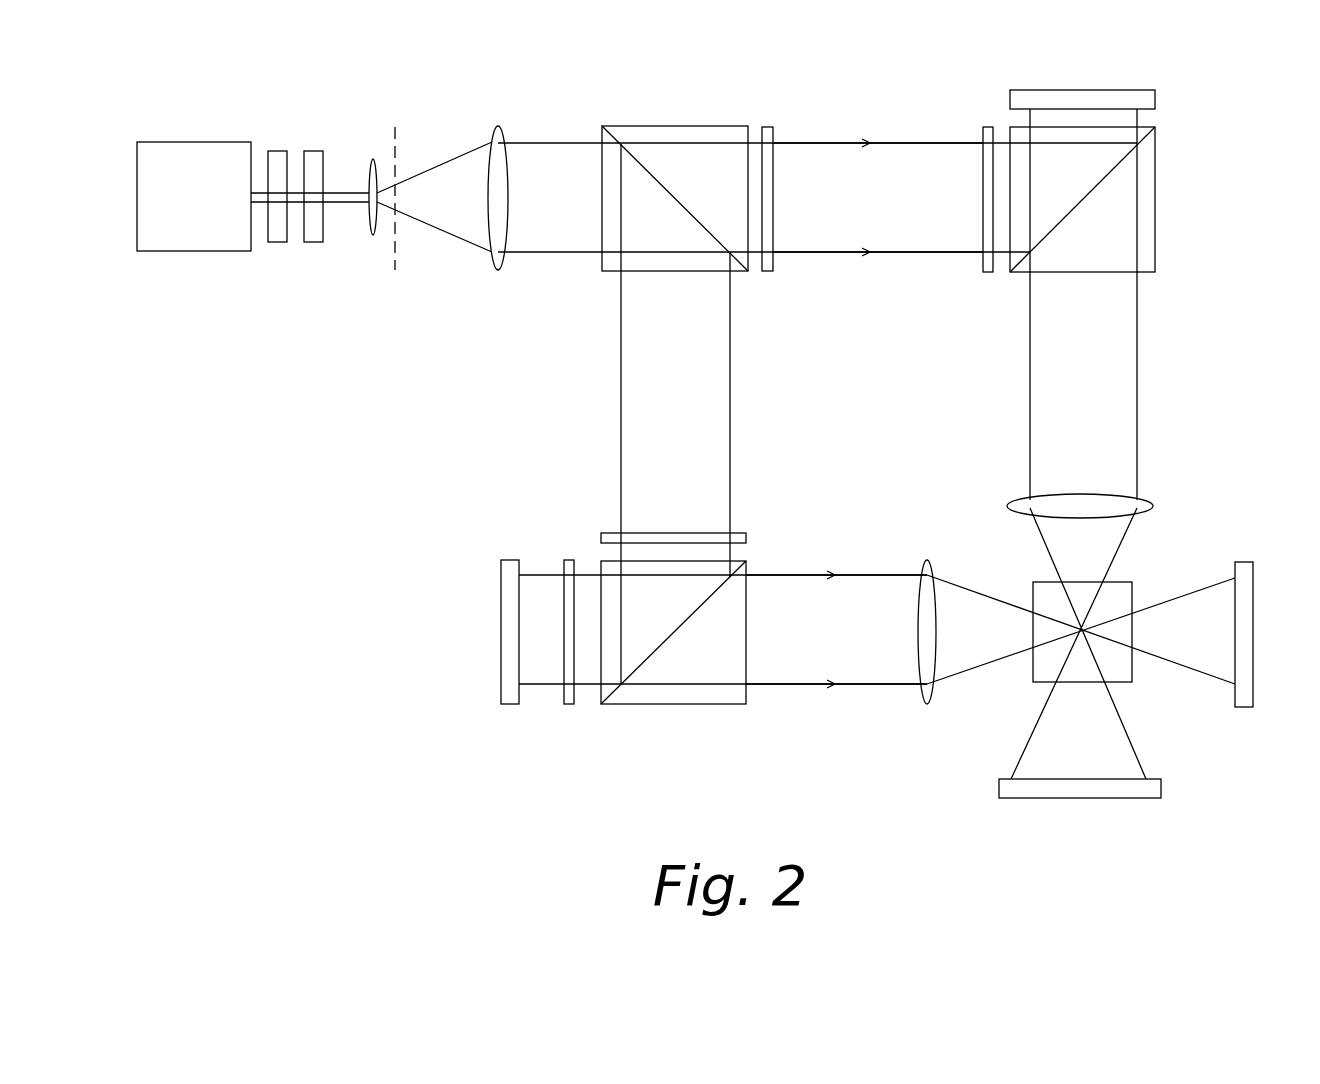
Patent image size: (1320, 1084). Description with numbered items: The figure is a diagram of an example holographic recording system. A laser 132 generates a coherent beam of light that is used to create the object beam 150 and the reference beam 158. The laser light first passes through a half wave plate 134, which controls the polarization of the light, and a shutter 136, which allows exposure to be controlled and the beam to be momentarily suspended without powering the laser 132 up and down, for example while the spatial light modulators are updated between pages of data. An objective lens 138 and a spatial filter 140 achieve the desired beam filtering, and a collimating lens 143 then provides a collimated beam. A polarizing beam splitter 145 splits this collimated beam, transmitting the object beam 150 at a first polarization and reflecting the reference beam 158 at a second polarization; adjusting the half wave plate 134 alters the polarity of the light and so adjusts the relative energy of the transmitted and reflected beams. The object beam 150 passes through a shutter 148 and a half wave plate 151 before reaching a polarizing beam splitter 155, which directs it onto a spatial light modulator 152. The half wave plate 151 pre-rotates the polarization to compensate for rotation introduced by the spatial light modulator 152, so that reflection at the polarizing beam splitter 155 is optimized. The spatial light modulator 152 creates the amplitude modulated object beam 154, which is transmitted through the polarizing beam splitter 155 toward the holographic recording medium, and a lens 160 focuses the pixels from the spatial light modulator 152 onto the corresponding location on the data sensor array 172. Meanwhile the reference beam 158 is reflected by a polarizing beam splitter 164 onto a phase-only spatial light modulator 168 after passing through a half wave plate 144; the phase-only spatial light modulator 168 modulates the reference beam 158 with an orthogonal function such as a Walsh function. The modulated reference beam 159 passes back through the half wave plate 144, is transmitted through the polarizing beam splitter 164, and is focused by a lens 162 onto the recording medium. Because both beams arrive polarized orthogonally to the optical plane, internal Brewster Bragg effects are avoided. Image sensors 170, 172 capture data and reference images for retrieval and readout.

The laser 132 is at (211, 222).
The half wave plate 134 is at (282, 151).
The shutter 136 is at (310, 242).
The objective lens 138 is at (370, 136).
The spatial filter 140 is at (397, 290).
The collimating lens 143 is at (498, 128).
The polarizing beam splitter 145 is at (685, 126).
The shutter 148 is at (766, 127).
The object beam 150 is at (858, 126).
The half wave plate 151 is at (987, 273).
The spatial light modulator 152 is at (1156, 100).
The modulated object beam 154 is at (1166, 378).
The polarizing beam splitter 155 is at (1156, 200).
The reference beam 158 is at (588, 344).
The modulated reference beam 159 is at (826, 724).
The lens 160 is at (1150, 506).
The lens 162 is at (925, 562).
The polarizing beam splitter 164 is at (670, 705).
The phase-only spatial light modulator 168 is at (510, 705).
The image sensor 170 is at (1245, 708).
The image sensor 172 is at (1162, 790).
The half wave plate 144 is at (570, 560).